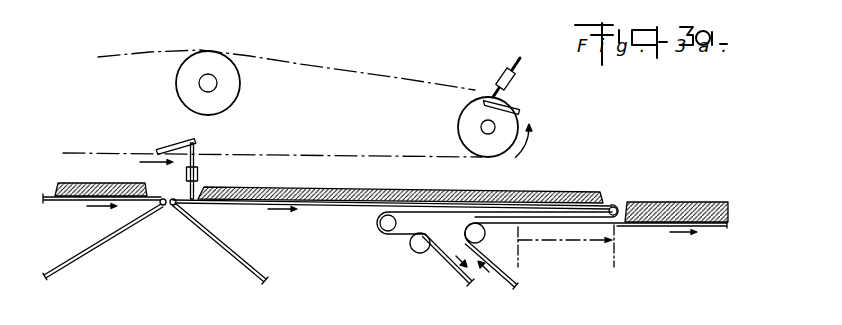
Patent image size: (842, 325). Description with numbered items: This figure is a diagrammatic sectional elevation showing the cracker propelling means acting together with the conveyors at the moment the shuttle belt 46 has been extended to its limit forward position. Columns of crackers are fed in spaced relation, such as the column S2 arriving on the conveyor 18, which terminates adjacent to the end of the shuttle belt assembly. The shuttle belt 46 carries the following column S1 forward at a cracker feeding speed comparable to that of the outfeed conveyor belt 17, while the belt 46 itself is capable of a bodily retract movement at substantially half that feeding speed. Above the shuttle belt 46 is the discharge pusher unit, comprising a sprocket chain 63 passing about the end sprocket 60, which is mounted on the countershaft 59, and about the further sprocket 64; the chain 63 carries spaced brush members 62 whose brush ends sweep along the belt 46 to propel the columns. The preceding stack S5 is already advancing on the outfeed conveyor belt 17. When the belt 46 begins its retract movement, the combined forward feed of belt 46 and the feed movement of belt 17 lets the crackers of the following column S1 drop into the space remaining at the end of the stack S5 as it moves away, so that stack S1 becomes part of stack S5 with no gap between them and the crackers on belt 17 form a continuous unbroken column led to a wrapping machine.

The sprocket 64 is at (238, 68).
The brush member 62 is at (199, 174).
The sprocket chain 63 is at (340, 157).
The countershaft 59 is at (484, 130).
The end sprocket 60 is at (505, 128).
The column of crackers S1 is at (558, 178).
The column of crackers S2 is at (85, 178).
The column of crackers S5 is at (683, 180).
The conveyor 18 is at (70, 200).
The shuttle belt 46 is at (258, 238).
The outfeed conveyor belt 17 is at (513, 283).